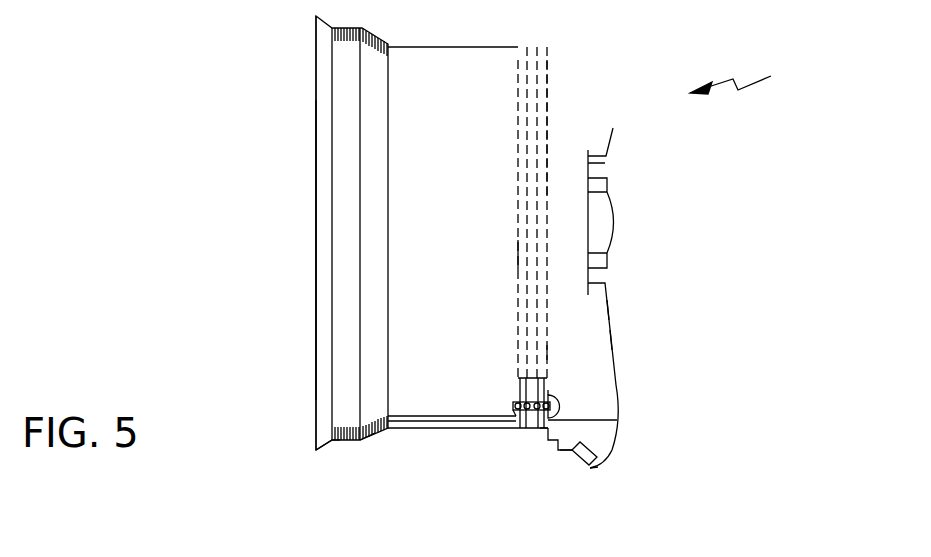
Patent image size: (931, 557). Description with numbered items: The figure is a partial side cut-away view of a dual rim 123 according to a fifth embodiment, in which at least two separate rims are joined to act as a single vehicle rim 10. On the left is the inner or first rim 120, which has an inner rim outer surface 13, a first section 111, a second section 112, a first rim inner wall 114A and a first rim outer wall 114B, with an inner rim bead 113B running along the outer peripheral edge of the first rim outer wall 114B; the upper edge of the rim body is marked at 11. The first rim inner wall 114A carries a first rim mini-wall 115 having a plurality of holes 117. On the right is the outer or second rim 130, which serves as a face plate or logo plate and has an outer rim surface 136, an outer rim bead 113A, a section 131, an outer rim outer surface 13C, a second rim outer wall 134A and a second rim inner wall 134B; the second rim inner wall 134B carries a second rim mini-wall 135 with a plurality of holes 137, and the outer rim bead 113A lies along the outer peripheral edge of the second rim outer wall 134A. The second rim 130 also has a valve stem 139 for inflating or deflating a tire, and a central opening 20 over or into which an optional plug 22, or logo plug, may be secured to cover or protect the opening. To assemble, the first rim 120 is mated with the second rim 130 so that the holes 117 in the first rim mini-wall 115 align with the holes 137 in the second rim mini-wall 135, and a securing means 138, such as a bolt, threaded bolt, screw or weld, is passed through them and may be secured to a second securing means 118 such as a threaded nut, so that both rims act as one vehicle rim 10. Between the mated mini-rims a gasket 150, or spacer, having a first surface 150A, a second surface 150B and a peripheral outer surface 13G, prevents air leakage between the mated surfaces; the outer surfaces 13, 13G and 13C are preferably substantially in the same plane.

The vehicle rim 10 is at (316, 250).
The top edge of panel 11 is at (440, 48).
The inner rim outer surface 13 is at (421, 428).
The outer rim outer surface 13C is at (548, 440).
The peripheral outer surface 13G is at (542, 430).
The central opening 20 is at (608, 168).
The plug 22 is at (615, 222).
The first section 111 is at (376, 440).
The second section 112 is at (338, 445).
The outer rim bead 113A is at (596, 467).
The inner rim bead 113B is at (318, 450).
The first rim inner wall 114A is at (518, 255).
The first rim outer wall 114B is at (316, 312).
The first rim mini-wall 115 is at (514, 410).
The holes 117 is at (517, 402).
The second securing means 118 is at (515, 405).
The first rim 120 is at (316, 195).
The dual rim 123 is at (828, 87).
The second rim 130 is at (610, 300).
The section 131 is at (566, 452).
The second rim outer wall 134A is at (617, 345).
The second rim inner wall 134B is at (585, 342).
The second rim mini-wall 135 is at (618, 420).
The outer rim surface 136 is at (612, 318).
The holes 137 is at (553, 395).
The securing means 138 is at (560, 406).
The valve stem 139 is at (590, 468).
The gasket 150 is at (531, 72).
The first surface 150A is at (536, 68).
The second surface 150B is at (527, 97).